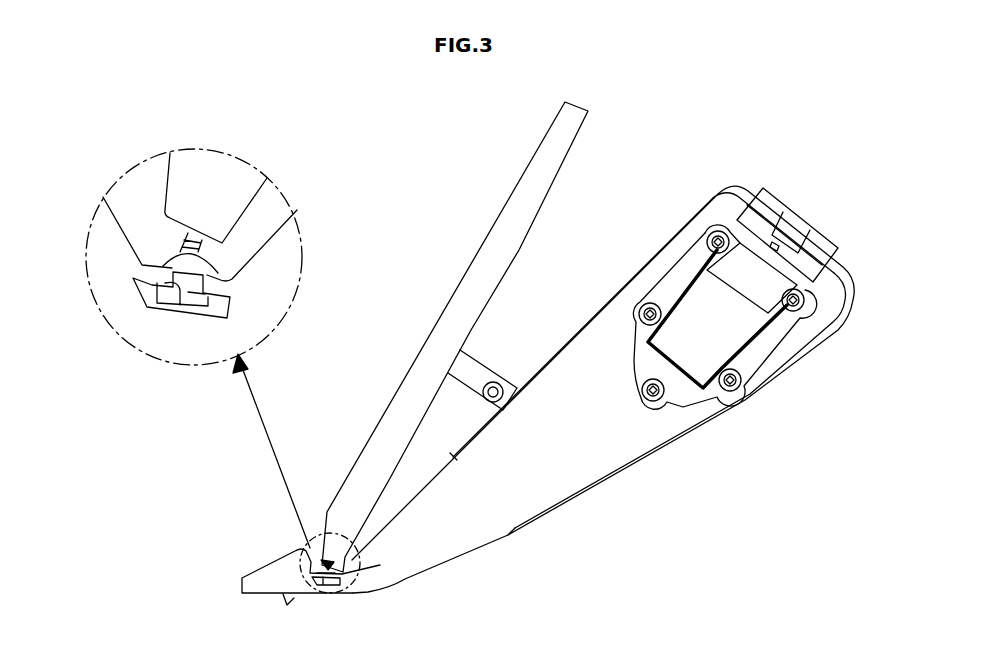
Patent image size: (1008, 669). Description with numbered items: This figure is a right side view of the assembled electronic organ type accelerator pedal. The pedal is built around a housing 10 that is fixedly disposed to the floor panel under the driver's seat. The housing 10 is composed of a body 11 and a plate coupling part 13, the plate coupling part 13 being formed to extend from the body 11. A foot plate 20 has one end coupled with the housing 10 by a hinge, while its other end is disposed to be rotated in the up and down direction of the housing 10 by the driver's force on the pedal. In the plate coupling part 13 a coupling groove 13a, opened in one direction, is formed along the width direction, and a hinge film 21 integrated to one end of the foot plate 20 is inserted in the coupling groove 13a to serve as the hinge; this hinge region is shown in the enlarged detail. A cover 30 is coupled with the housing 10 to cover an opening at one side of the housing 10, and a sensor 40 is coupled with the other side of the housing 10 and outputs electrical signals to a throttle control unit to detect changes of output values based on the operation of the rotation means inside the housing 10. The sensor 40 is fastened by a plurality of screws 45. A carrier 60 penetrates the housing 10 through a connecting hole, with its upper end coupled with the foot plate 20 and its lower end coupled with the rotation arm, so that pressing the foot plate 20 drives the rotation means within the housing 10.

The housing 10 is at (588, 508).
The body 11 is at (663, 442).
The plate coupling part 13 is at (267, 583).
The coupling groove 13a is at (187, 294).
The foot plate 20 is at (220, 166).
The hinge film 21 is at (203, 302).
The cover 30 is at (690, 207).
The sensor 40 is at (806, 212).
The screws 45 is at (743, 382).
The carrier 60 is at (492, 366).